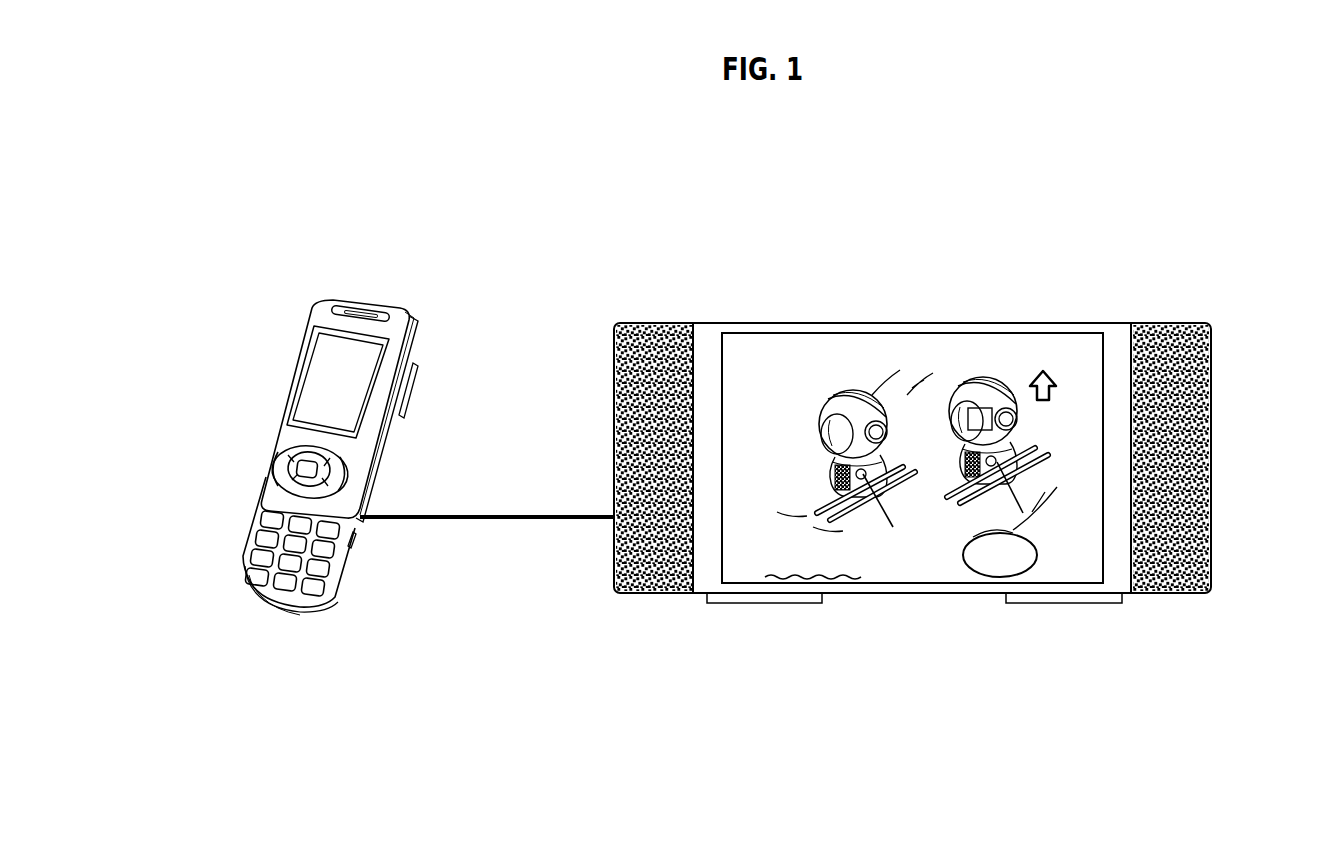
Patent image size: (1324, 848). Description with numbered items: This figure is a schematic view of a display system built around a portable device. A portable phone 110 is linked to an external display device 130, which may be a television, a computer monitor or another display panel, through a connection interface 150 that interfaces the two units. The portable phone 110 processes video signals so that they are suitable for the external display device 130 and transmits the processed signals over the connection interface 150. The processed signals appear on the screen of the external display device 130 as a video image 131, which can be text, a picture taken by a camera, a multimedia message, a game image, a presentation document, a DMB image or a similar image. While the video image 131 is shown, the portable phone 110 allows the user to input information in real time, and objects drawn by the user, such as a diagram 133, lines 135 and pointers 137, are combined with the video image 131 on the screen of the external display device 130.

The portable phone 110 is at (291, 368).
The external display device 130 is at (890, 318).
The video image 131 is at (817, 404).
The diagram 133 is at (1027, 473).
The lines 135 is at (801, 578).
The pointers 137 is at (1058, 378).
The connection interface 150 is at (470, 519).